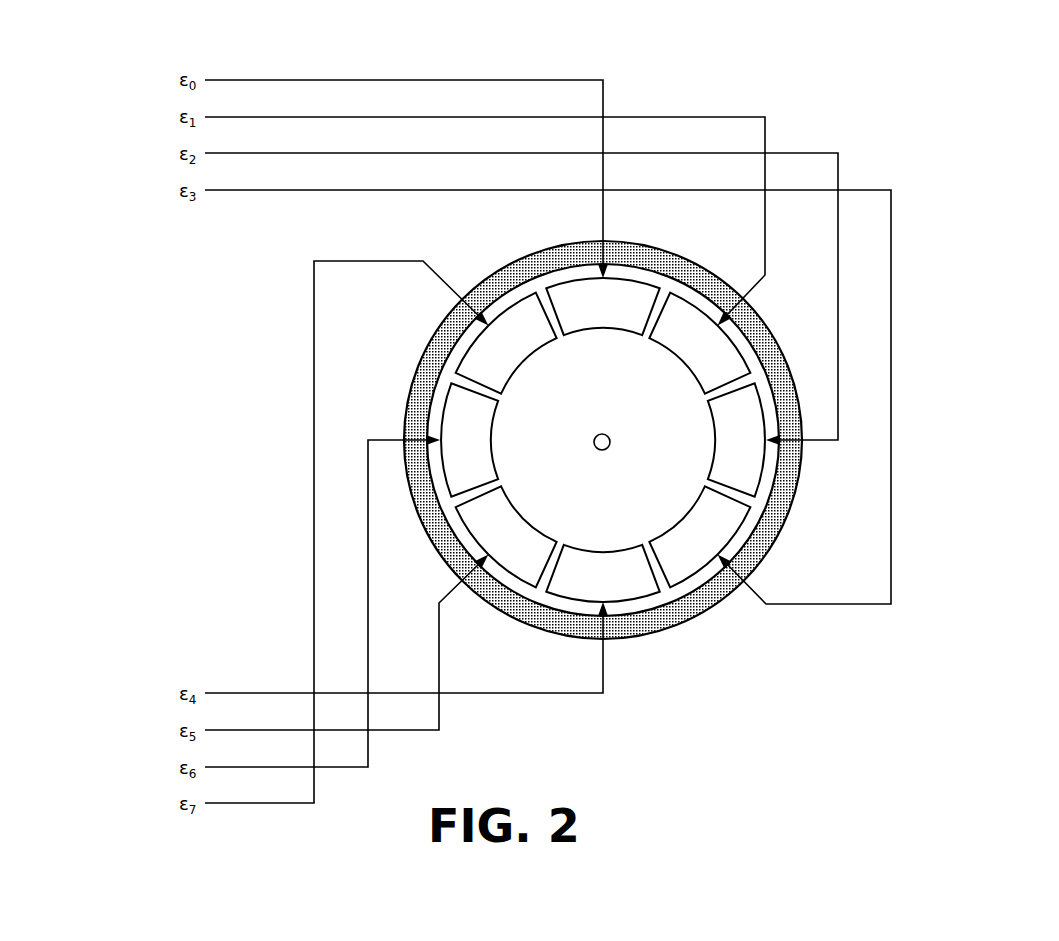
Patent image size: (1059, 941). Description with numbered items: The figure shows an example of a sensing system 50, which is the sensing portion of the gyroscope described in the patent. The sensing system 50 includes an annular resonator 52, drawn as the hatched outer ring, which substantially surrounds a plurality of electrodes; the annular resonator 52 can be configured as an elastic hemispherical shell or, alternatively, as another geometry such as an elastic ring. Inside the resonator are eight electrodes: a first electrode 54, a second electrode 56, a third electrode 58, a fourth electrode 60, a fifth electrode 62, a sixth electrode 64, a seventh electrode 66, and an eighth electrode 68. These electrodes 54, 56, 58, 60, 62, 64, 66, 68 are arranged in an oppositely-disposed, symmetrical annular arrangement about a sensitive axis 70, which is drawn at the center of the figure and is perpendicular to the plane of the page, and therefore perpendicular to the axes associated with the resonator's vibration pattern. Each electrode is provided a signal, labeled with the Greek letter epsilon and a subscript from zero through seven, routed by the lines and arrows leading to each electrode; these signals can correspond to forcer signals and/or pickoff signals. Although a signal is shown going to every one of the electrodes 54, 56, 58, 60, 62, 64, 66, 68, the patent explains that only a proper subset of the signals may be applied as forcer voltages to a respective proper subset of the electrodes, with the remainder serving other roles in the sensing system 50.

The sensing system 50 is at (108, 72).
The annular resonator 52 is at (560, 247).
The first electrode 54 is at (590, 315).
The second electrode 56 is at (687, 355).
The third electrode 58 is at (728, 452).
The fourth electrode 60 is at (687, 549).
The fifth electrode 62 is at (590, 589).
The sixth electrode 64 is at (493, 549).
The seventh electrode 66 is at (451, 452).
The eighth electrode 68 is at (493, 355).
The sensitive axis 70 is at (602, 442).